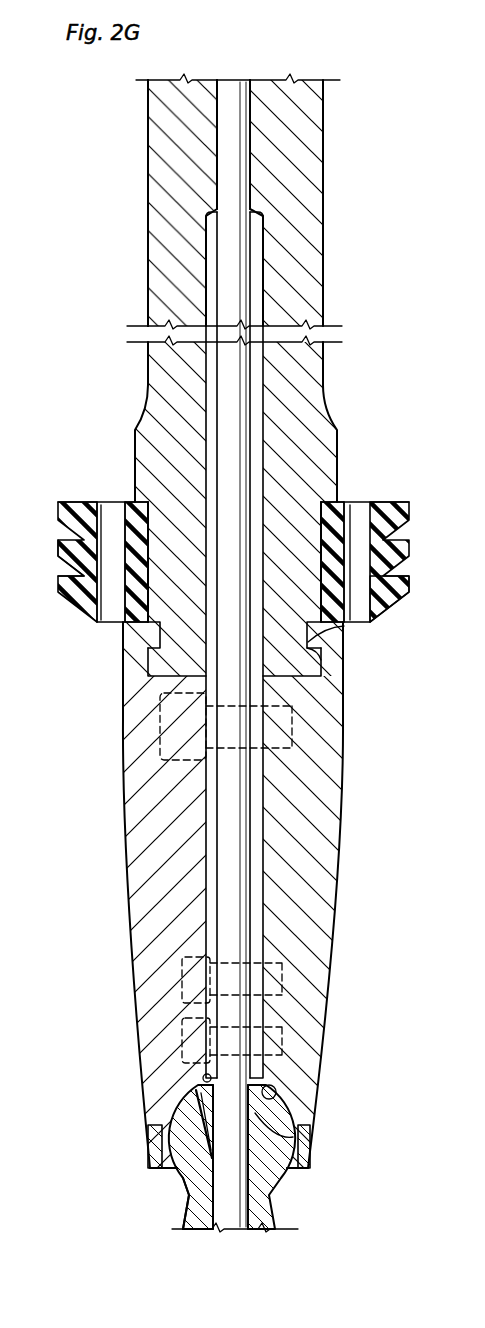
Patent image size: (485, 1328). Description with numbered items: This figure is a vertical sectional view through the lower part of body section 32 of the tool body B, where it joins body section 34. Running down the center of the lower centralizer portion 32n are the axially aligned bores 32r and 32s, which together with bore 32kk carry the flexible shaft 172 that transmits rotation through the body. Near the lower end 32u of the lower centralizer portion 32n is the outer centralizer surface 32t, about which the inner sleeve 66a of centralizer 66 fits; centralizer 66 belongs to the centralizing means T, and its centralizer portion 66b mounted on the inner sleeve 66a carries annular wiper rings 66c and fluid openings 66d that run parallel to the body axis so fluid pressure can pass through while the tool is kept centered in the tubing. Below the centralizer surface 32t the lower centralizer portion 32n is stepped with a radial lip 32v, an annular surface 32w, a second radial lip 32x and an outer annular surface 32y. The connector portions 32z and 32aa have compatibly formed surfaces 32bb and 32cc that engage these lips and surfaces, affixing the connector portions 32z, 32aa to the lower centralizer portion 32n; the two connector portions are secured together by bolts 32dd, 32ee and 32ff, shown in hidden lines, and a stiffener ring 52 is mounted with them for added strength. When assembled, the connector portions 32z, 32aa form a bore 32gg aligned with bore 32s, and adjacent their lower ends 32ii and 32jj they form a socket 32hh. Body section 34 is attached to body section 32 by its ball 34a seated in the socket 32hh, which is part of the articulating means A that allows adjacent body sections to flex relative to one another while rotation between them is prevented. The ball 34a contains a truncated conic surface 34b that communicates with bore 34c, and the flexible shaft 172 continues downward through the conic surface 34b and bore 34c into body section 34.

The body section 32 is at (148, 160).
The lower centralizer portion 32n is at (312, 136).
The bore 32r is at (222, 117).
The body B is at (146, 140).
The bore 32s is at (260, 246).
The bore 32kk is at (264, 384).
The lower end 32u is at (167, 445).
The outer centralizer surface 32t is at (332, 522).
The centralizer 66 is at (412, 555).
The inner sleeve 66a is at (385, 593).
The centralizer portion 66b is at (72, 505).
The annular wiper rings 66c is at (58, 548).
The fluid openings 66d is at (112, 590).
The centralizing means T is at (404, 498).
The compatibly formed surface 32bb is at (158, 629).
The outer annular surface 32y is at (150, 667).
The radial lip 32v is at (320, 628).
The annular surface 32w is at (310, 638).
The radial lip 32x is at (312, 653).
The compatibly formed surface 32cc is at (300, 668).
The connector portion 32z is at (150, 806).
The connector portion 32aa is at (315, 782).
The bolt 32dd is at (162, 707).
The bolt 32ee is at (185, 977).
The bolt 32ff is at (185, 1046).
The bore 32gg is at (260, 831).
The flexible shaft 172 is at (238, 868).
The lower end 32ii is at (203, 1075).
The socket 32hh is at (276, 1088).
The lower end 32jj is at (285, 1098).
The body section 34 is at (278, 1218).
The ball 34a is at (162, 1161).
The truncated conic surface 34b is at (313, 1140).
The bore 34c is at (226, 1228).
The stiffener ring 52 is at (148, 1141).
The articulating means A is at (186, 1176).